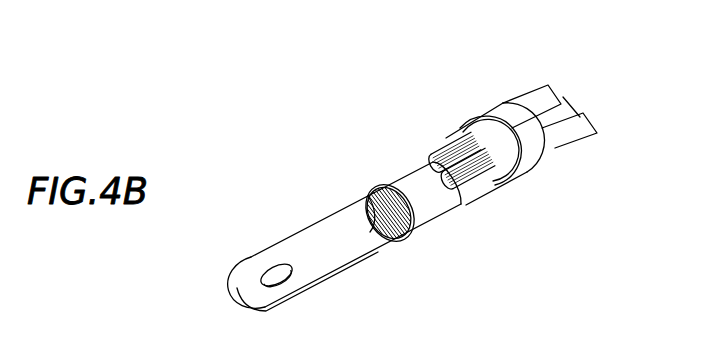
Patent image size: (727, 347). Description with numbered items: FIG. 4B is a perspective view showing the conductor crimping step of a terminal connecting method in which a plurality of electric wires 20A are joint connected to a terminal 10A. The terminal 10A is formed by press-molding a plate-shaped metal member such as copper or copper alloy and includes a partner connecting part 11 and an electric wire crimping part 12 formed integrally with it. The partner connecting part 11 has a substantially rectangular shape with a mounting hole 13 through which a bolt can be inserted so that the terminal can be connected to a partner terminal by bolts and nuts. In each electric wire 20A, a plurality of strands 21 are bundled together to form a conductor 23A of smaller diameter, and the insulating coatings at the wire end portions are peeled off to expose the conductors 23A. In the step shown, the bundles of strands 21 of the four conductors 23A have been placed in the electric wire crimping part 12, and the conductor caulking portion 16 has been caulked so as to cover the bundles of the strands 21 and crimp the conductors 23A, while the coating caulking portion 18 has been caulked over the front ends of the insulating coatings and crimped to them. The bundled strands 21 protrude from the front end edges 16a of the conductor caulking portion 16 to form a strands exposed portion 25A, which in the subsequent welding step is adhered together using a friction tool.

The terminal 10A is at (364, 251).
The partner connecting part 11 is at (342, 252).
The electric wire crimping part 12 is at (513, 105).
The mounting hole 13 is at (283, 286).
The conductor caulking portion 16 is at (422, 187).
The front end edges 16a is at (392, 239).
The coating caulking portion 18 is at (512, 138).
The electric wires 20A is at (531, 88).
The strands 21 is at (383, 239).
The conductor 23A is at (440, 135).
The strands exposed portion 25A is at (354, 229).